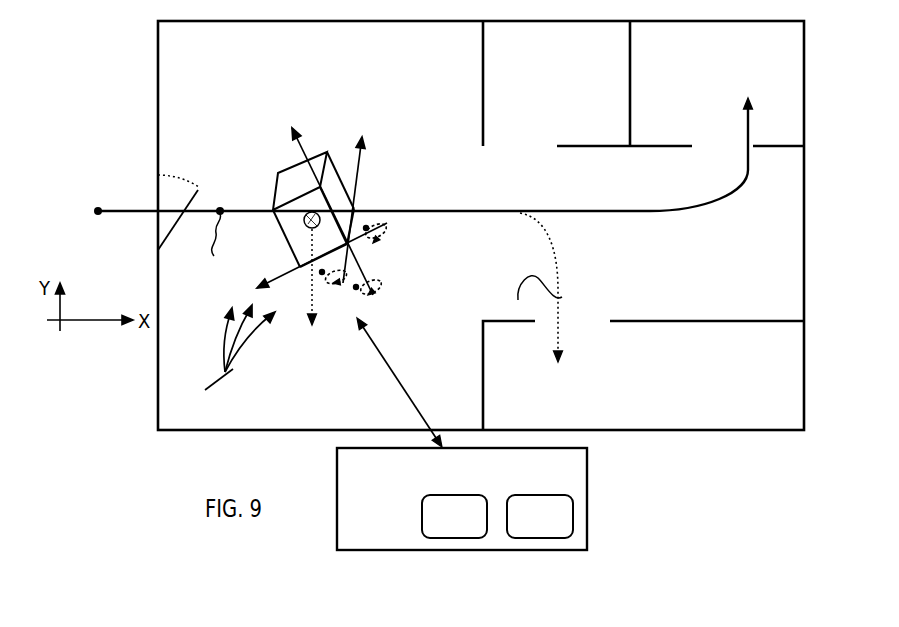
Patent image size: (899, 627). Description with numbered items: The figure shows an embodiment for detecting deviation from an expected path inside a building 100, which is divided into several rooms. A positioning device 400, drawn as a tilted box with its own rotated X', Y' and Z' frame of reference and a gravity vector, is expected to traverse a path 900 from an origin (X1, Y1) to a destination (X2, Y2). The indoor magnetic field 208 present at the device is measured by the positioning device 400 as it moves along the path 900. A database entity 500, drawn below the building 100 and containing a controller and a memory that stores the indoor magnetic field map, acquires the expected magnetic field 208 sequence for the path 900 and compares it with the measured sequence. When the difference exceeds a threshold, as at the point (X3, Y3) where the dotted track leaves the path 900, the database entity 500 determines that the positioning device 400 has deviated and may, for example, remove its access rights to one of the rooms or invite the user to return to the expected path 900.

The building 100 is at (481, 225).
The indoor magnetic field 208 is at (217, 376).
The positioning device 400 is at (278, 180).
The database entity 500 is at (462, 434).
The path 900 is at (652, 216).